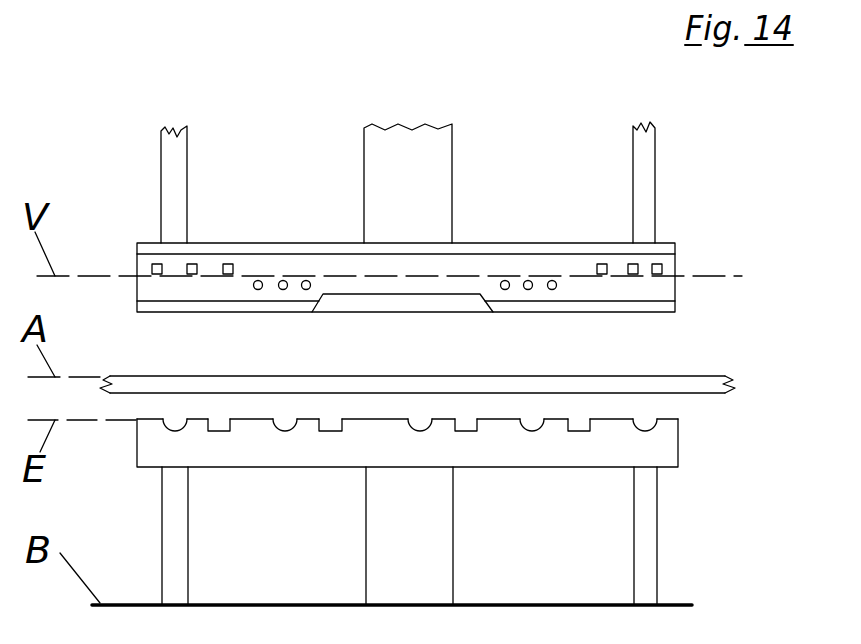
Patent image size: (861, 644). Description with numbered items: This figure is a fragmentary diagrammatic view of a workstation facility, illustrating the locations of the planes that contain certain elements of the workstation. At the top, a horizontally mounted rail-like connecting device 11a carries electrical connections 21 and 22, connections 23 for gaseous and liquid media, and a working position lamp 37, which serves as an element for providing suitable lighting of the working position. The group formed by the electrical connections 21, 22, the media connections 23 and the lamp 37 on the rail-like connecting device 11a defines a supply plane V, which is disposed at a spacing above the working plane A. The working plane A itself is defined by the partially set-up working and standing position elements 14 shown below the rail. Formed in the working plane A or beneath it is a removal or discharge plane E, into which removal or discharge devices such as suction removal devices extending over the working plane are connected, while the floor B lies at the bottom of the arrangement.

The rail-like connecting device 11a is at (572, 270).
The working position lamp 37 is at (458, 302).
The electrical connection 21 is at (155, 266).
The electrical connection 22 is at (228, 264).
The connection for gaseous and liquid media 23 is at (306, 281).
The working and standing position element 14 is at (703, 383).